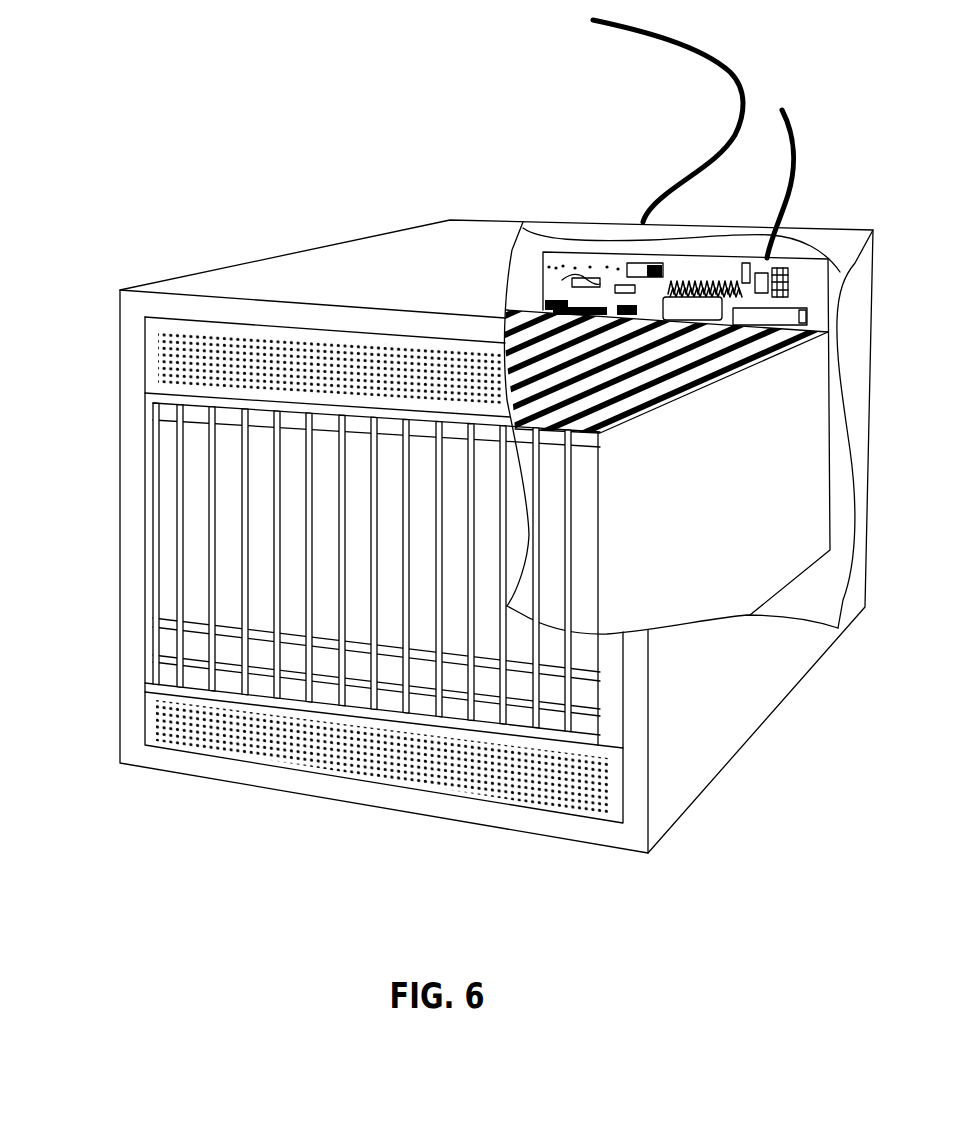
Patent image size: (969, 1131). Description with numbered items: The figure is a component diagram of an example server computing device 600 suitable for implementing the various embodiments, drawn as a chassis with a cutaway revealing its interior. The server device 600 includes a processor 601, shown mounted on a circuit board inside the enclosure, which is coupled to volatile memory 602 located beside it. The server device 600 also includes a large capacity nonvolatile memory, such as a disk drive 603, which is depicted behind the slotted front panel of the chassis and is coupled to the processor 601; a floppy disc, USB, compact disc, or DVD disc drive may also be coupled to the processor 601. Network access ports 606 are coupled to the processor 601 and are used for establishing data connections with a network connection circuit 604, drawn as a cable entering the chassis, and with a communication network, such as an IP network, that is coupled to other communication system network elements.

The server computing device 600 is at (352, 240).
The processor 601 is at (697, 298).
The volatile memory 602 is at (800, 310).
The disk drive 603 is at (235, 487).
The network connection circuit 604 is at (743, 95).
The network access ports 606 is at (545, 312).